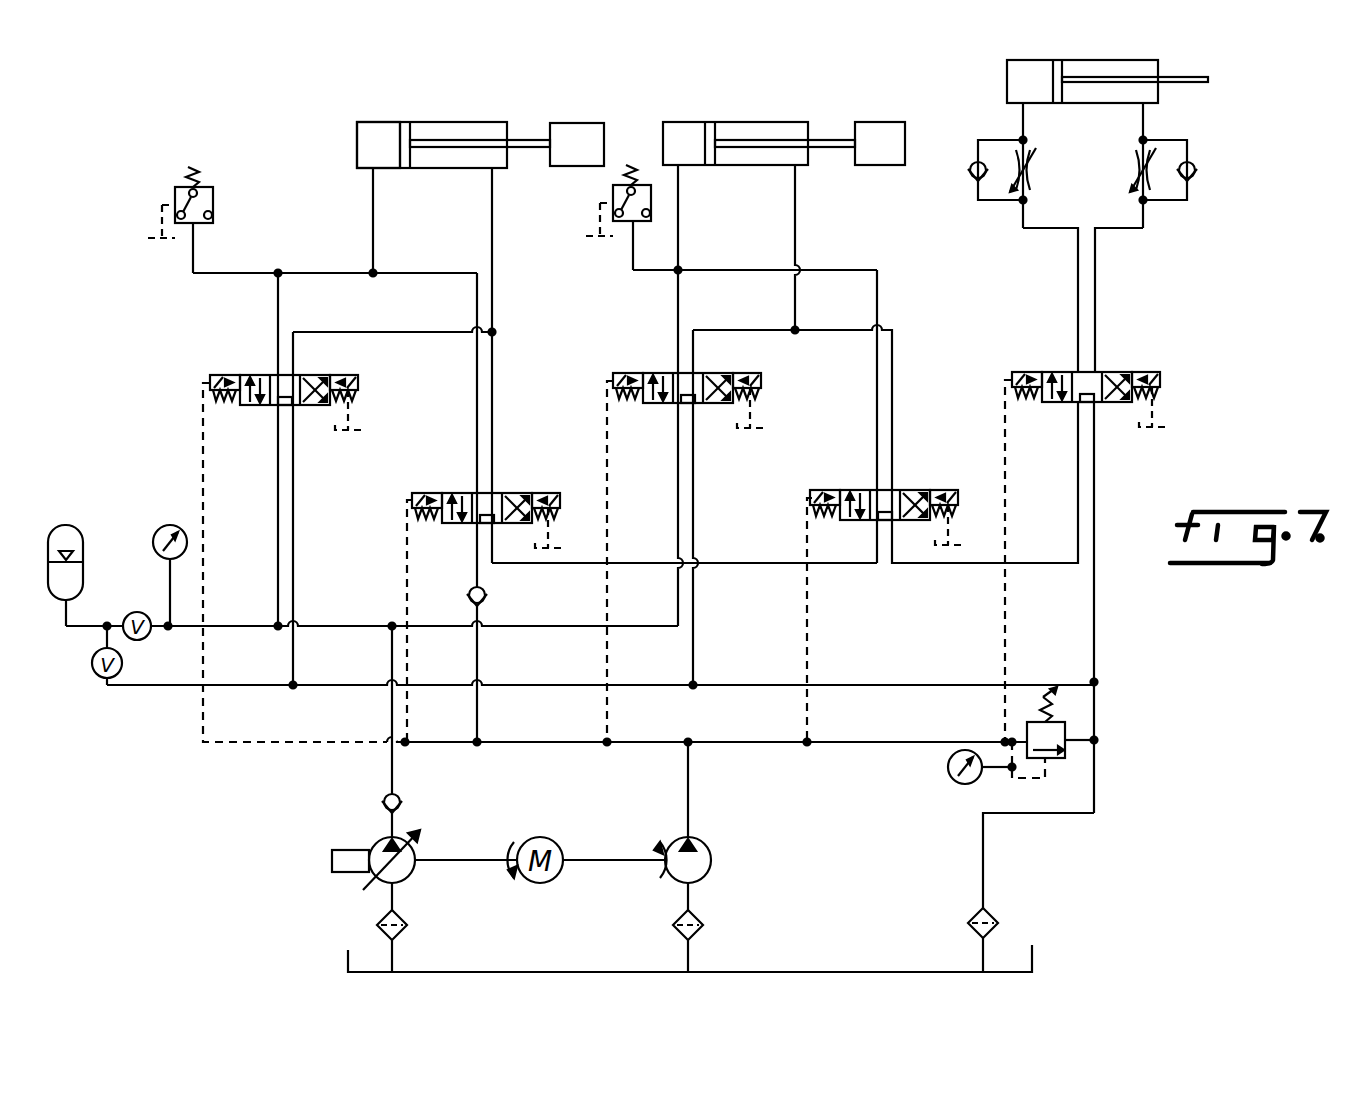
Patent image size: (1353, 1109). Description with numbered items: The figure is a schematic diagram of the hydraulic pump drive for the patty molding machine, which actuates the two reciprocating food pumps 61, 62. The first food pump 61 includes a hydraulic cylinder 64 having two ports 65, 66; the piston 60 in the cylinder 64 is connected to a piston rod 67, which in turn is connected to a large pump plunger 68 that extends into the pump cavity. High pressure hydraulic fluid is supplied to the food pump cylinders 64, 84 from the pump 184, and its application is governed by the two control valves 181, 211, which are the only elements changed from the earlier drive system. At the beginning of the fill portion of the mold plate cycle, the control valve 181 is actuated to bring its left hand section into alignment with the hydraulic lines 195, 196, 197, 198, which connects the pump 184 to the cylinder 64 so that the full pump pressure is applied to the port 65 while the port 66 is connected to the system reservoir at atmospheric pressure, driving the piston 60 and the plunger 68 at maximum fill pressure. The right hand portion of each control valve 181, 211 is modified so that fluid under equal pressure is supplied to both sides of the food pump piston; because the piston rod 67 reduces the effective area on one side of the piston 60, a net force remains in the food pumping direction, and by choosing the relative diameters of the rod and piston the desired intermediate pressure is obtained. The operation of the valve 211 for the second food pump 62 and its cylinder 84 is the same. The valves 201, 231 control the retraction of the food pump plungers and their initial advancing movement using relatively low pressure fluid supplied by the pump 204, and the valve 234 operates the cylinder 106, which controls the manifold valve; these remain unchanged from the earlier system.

The piston 60 is at (406, 122).
The food pump 61 is at (532, 133).
The hydraulic cylinder 64 is at (356, 139).
The port 65 is at (371, 170).
The port 66 is at (491, 170).
The piston rod 67 is at (533, 150).
The pump plunger 68 is at (584, 122).
The food pump cylinder 84 is at (772, 122).
The food pump 62 is at (841, 133).
The cylinder 106 is at (1160, 92).
The hydraulic line 195 is at (277, 294).
The hydraulic line 196 is at (400, 332).
The hydraulic line 197 is at (277, 512).
The hydraulic line 198 is at (294, 533).
The control valve 181 is at (256, 375).
The valve 201 is at (510, 493).
The control valve 211 is at (661, 373).
The valve 231 is at (910, 490).
The valve 234 is at (1132, 372).
The pump 184 is at (418, 875).
The pump 204 is at (712, 860).